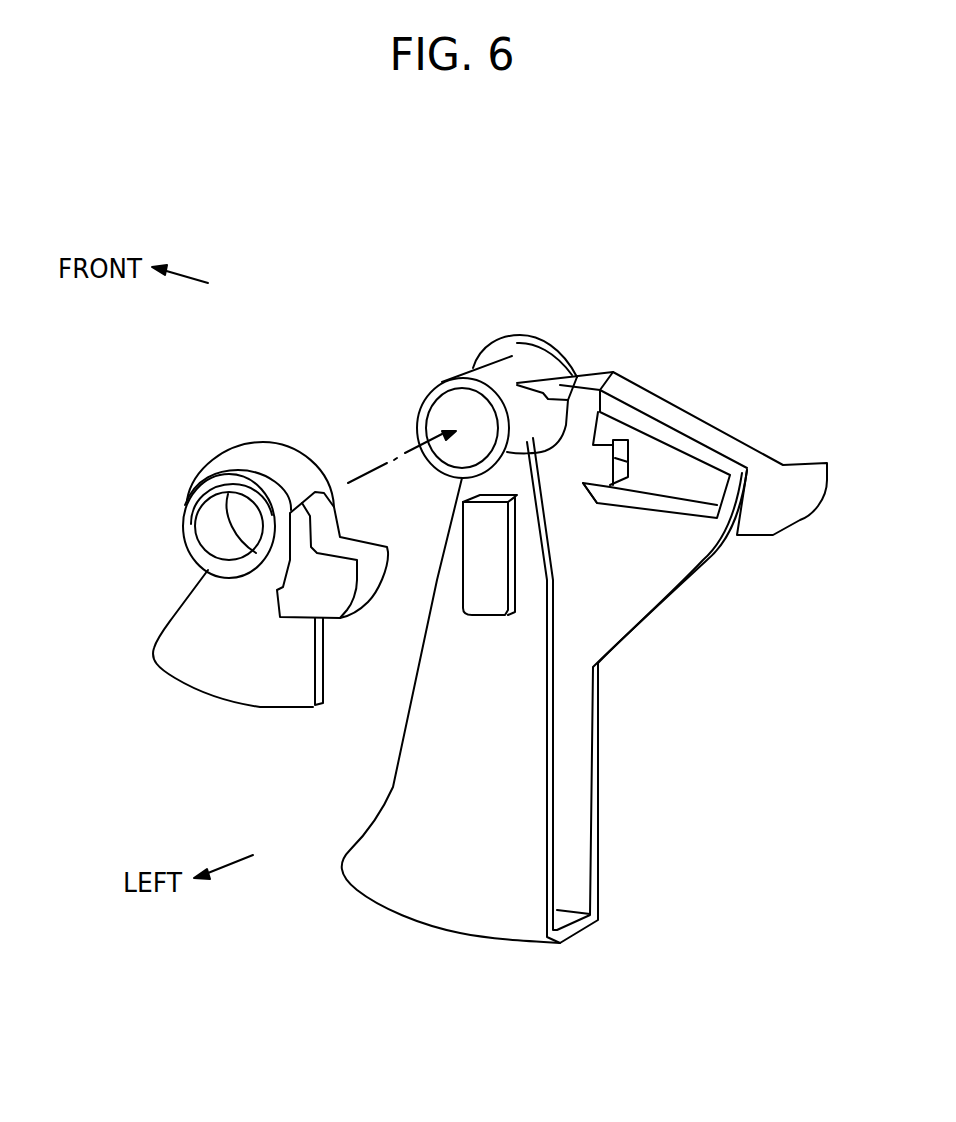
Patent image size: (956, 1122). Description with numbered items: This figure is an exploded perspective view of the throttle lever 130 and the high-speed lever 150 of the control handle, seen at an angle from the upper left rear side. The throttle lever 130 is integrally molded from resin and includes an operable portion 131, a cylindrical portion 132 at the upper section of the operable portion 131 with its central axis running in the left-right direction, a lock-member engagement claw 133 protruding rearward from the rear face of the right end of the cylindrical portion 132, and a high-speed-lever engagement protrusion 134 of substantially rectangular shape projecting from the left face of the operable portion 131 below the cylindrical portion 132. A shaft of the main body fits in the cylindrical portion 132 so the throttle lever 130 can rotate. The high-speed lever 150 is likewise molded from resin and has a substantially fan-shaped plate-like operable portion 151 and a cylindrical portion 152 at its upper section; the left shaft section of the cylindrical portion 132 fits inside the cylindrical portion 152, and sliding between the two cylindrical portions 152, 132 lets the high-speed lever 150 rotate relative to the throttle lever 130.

The throttle lever 130 is at (670, 723).
The operable portion 131 is at (403, 790).
The cylindrical portion 132 is at (470, 372).
The lock-member engagement claw 133 is at (788, 462).
The high-speed-lever engagement protrusion 134 is at (513, 572).
The high-speed lever 150 is at (219, 426).
The operable portion 151 is at (181, 618).
The cylindrical portion 152 is at (187, 505).